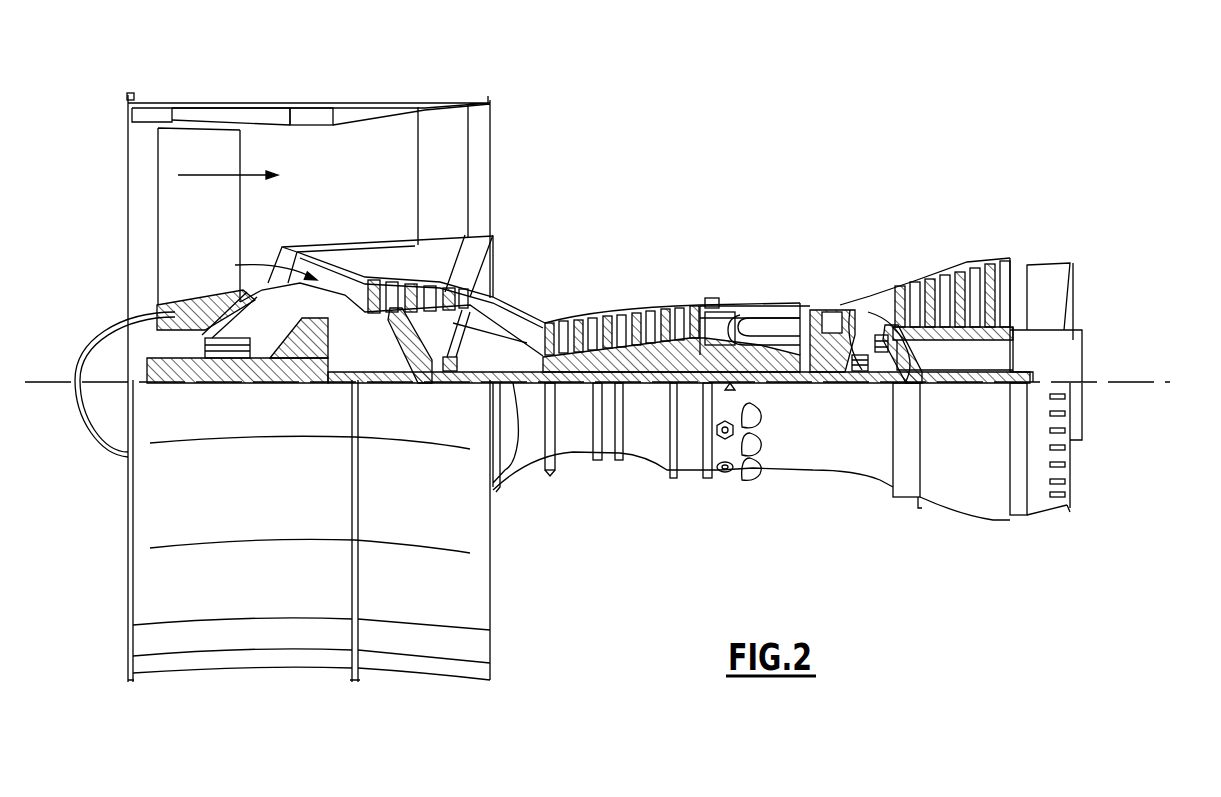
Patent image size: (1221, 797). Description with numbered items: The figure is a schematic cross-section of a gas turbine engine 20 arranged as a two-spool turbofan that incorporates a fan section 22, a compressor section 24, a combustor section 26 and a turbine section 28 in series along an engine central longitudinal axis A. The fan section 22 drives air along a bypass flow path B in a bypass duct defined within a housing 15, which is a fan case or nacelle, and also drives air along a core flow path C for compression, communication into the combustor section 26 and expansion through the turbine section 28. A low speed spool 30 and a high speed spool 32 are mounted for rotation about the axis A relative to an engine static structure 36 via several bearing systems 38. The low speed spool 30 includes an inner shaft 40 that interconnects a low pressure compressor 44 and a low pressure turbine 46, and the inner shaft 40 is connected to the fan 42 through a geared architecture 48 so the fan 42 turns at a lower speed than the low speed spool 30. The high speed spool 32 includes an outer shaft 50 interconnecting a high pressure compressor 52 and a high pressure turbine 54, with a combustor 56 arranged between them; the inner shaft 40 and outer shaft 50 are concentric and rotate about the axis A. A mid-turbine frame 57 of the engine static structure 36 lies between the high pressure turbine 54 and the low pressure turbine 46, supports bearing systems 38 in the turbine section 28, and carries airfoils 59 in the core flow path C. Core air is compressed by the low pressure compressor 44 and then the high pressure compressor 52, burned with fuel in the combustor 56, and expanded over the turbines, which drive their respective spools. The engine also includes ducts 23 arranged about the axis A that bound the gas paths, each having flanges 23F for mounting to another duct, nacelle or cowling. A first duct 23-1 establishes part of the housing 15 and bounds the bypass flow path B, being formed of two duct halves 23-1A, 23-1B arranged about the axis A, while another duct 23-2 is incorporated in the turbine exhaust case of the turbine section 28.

The housing 15 is at (310, 103).
The gas turbine engine 20 is at (772, 148).
The fan section 22 is at (240, 90).
The ducts 23 is at (177, 100).
The first duct 23-1 is at (317, 213).
The duct half 23-1A is at (360, 102).
The duct half 23-1B is at (372, 678).
The duct 23-2 is at (1047, 265).
The flanges 23F is at (497, 98).
The compressor section 24 is at (542, 288).
The combustor section 26 is at (788, 298).
The turbine section 28 is at (953, 278).
The low speed spool 30 is at (650, 400).
The high speed spool 32 is at (693, 332).
The engine static structure 36 is at (688, 485).
The bearing systems 38 is at (452, 370).
The inner shaft 40 is at (512, 387).
The fan 42 is at (214, 229).
The low pressure compressor 44 is at (462, 270).
The low pressure turbine 46 is at (960, 268).
The geared architecture 48 is at (318, 368).
The outer shaft 50 is at (767, 383).
The high pressure compressor 52 is at (615, 332).
The high pressure turbine 54 is at (832, 312).
The combustor 56 is at (770, 322).
The mid-turbine frame 57 is at (877, 298).
The airfoils 59 is at (893, 335).
The engine central longitudinal axis A is at (1163, 382).
The bypass flow path B is at (214, 175).
The core flow path C is at (235, 265).